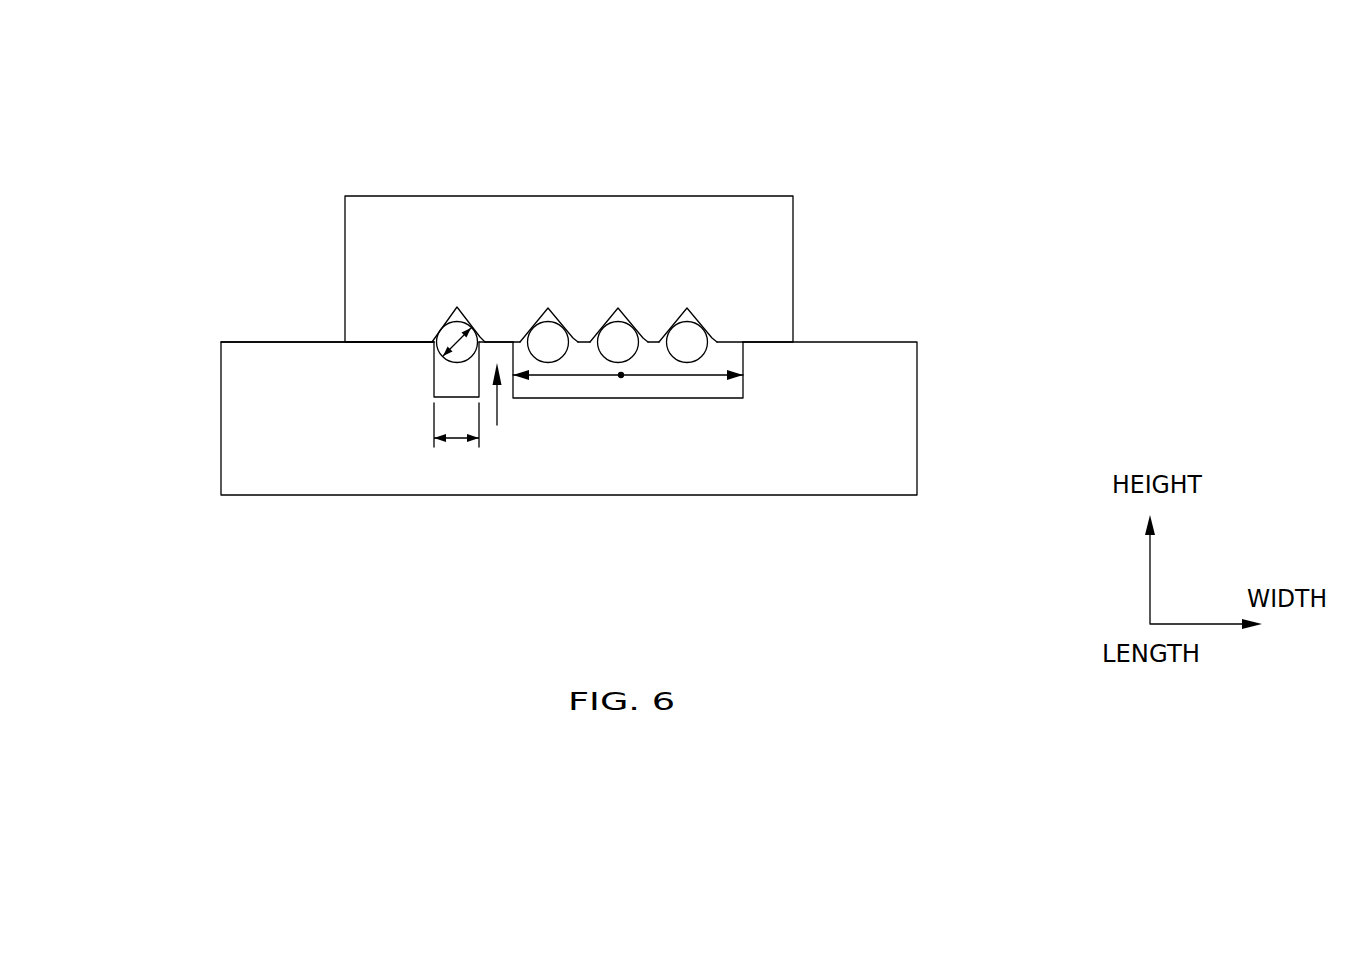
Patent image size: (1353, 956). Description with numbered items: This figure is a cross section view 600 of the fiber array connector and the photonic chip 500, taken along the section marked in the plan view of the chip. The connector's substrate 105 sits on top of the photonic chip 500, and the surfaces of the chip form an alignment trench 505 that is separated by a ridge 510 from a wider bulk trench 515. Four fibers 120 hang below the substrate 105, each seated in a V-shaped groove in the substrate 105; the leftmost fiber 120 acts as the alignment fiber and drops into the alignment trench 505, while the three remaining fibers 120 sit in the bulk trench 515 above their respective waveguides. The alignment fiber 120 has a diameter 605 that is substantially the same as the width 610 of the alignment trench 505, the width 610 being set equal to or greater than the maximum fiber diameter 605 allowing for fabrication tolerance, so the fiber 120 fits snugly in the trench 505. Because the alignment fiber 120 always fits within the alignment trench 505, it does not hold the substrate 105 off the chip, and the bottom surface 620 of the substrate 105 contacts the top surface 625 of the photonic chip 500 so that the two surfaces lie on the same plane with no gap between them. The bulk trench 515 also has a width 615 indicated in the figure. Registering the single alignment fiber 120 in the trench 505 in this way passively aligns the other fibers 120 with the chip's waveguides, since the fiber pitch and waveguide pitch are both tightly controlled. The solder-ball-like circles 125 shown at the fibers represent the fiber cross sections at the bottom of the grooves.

The cross section view 600 is at (1063, 110).
The substrate 105 is at (793, 268).
The photonic chip 500 is at (917, 418).
The alignment trench 505 is at (457, 377).
The ridge 510 is at (499, 425).
The bulk trench 515 is at (677, 384).
The fiber 120 is at (690, 333).
The solder bump 125 is at (452, 323).
The diameter 605 is at (442, 332).
The width 610 is at (455, 444).
The width of second cavity 615 is at (621, 375).
The bottom surface 620 is at (376, 340).
The top surface 625 is at (265, 340).